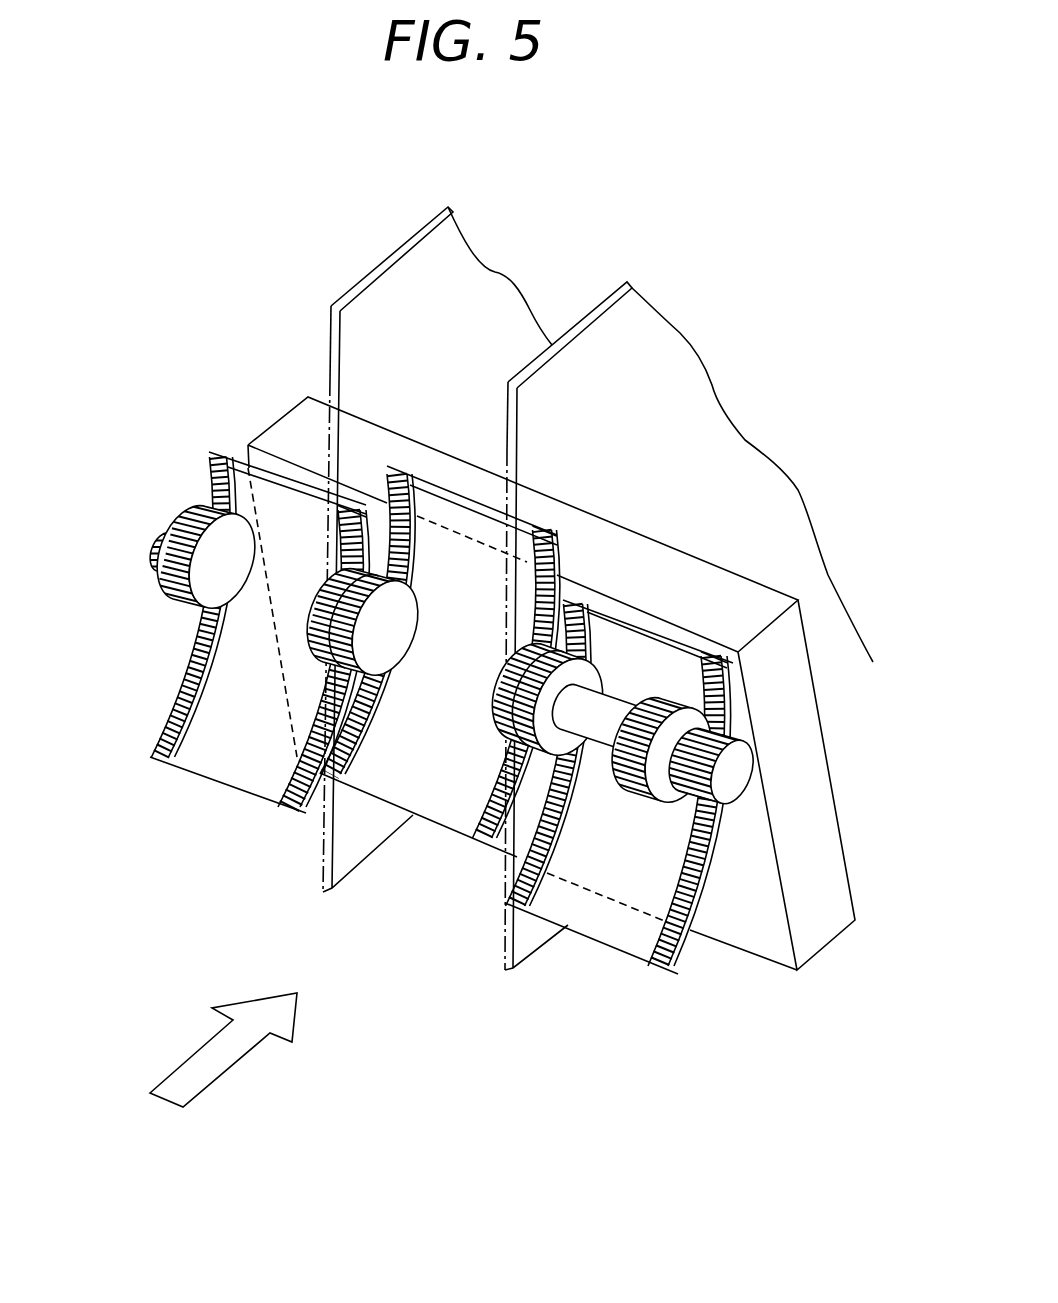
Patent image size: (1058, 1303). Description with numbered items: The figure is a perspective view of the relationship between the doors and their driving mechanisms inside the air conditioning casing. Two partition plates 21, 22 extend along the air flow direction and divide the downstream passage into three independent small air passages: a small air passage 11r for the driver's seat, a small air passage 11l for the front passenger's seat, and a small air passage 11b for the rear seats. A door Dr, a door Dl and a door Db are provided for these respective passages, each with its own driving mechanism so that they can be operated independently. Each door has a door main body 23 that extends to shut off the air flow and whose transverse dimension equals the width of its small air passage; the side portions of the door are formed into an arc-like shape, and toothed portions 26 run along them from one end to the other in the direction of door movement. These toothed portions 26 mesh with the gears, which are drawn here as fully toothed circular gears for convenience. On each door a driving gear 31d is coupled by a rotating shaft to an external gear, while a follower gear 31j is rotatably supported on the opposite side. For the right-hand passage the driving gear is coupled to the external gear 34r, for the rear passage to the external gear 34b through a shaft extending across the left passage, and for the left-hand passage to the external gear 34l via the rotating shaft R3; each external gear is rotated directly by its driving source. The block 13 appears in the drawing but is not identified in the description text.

The housing 13 is at (810, 813).
The partition plate 21 is at (506, 263).
The partition plate 22 is at (703, 367).
The door main body 23 is at (256, 762).
The toothed portions 26 is at (159, 739).
The follower gear 31j is at (315, 588).
The driving gear 31d is at (225, 581).
The external gear 34r is at (152, 538).
The external gear 34l is at (675, 793).
The external gear 34b is at (732, 780).
The rotating shaft R3 is at (618, 740).
The small air passage 11r is at (251, 826).
The small air passage 11b is at (443, 851).
The small air passage 11l is at (618, 983).
The door Dr is at (190, 781).
The door Db is at (395, 820).
The door Dl is at (577, 940).